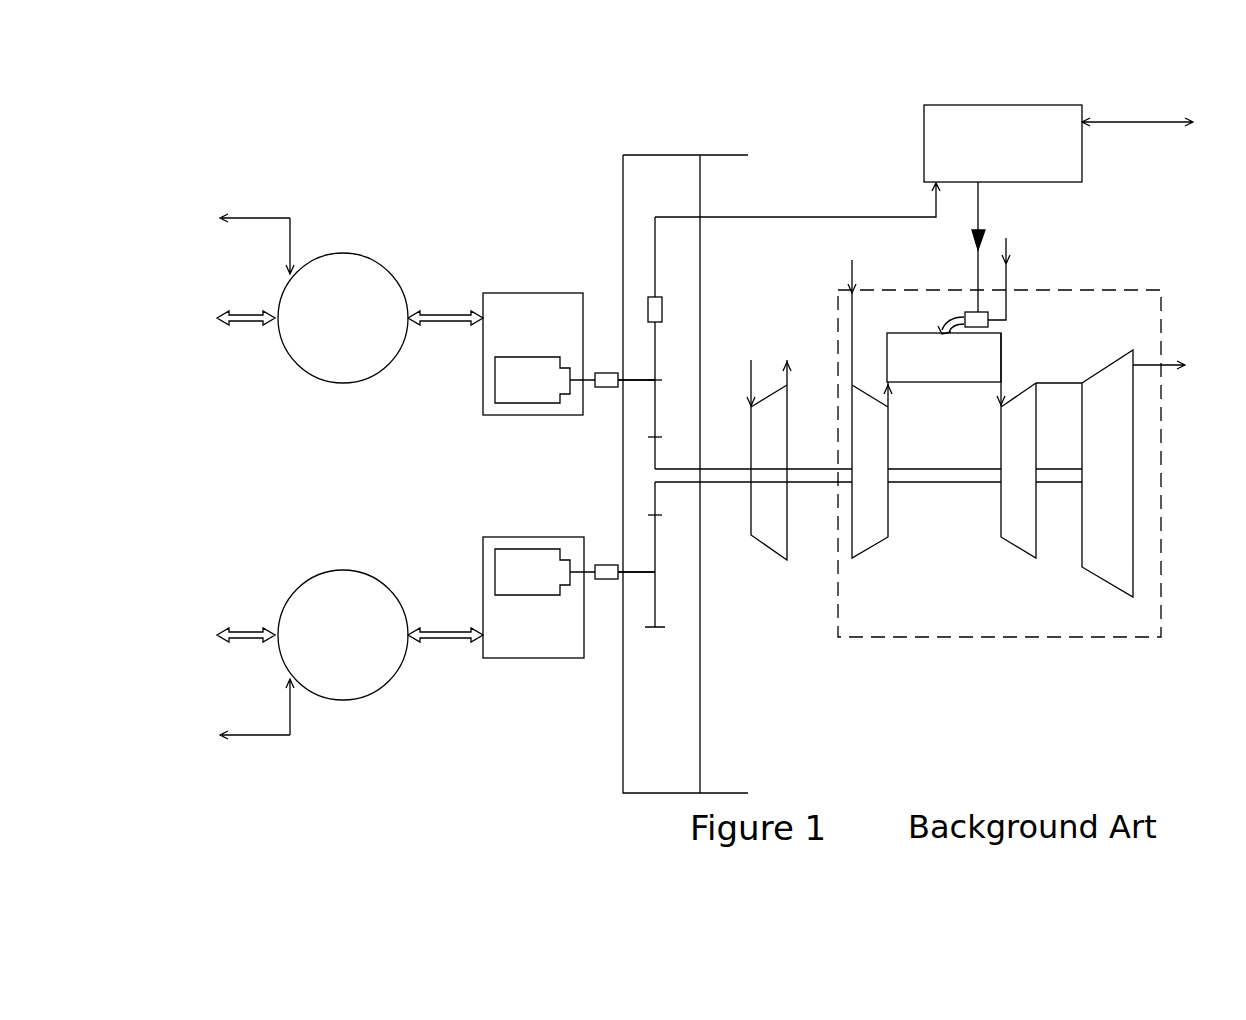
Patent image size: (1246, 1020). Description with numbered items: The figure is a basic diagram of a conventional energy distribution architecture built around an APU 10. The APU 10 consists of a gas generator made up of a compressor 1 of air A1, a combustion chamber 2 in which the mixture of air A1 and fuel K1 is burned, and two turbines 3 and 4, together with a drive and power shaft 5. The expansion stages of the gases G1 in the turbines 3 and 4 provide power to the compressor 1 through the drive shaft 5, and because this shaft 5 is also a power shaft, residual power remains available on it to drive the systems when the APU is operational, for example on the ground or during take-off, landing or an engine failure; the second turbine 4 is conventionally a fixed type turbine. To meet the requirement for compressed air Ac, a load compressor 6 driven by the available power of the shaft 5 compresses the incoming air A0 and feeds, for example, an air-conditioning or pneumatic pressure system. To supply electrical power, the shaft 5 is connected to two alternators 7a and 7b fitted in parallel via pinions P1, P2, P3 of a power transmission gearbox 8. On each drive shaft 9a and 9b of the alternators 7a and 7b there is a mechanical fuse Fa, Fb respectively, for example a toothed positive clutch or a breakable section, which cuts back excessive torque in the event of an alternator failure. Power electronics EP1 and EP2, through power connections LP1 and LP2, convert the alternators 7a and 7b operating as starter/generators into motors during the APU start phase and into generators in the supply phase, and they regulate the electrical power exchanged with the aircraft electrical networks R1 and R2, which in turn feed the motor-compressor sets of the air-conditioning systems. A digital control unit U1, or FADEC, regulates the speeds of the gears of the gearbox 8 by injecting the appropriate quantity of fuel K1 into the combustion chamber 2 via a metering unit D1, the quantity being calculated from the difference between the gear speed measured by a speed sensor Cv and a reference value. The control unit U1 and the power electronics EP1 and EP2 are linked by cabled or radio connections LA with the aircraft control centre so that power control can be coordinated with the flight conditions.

The compressor 1 is at (872, 542).
The combustion chamber 2 is at (887, 352).
The first turbine 3 is at (1012, 541).
The second turbine 4 is at (1098, 568).
The drive and power shaft 5 is at (957, 483).
The load compressor 6 is at (763, 547).
The first alternator 7a is at (525, 293).
The second alternator 7b is at (525, 537).
The power transmission gearbox 8 is at (748, 155).
The drive shaft of the first alternator 9a is at (643, 386).
The drive shaft of the second alternator 9b is at (643, 576).
The APU 10 is at (1140, 310).
The digital control unit U1 is at (1082, 105).
The metering unit D1 is at (960, 312).
The fuel K1 is at (1003, 266).
The speed sensor Cv is at (662, 305).
The pinion P1 is at (658, 465).
The pinion P2 is at (658, 414).
The pinion P3 is at (665, 572).
The mechanical fuse Fa is at (603, 373).
The mechanical fuse Fb is at (603, 565).
The power electronics EP1 is at (343, 318).
The power electronics EP2 is at (343, 635).
The power connection LP1 is at (430, 313).
The power connection LP2 is at (428, 630).
The aircraft electrical network R1 is at (217, 336).
The aircraft electrical network R2 is at (217, 654).
The cabled or radio connections LA is at (703, 428).
The incoming air A0 is at (748, 351).
The compressed air Ac is at (790, 351).
The air A1 is at (890, 408).
The gases G1 is at (1066, 364).